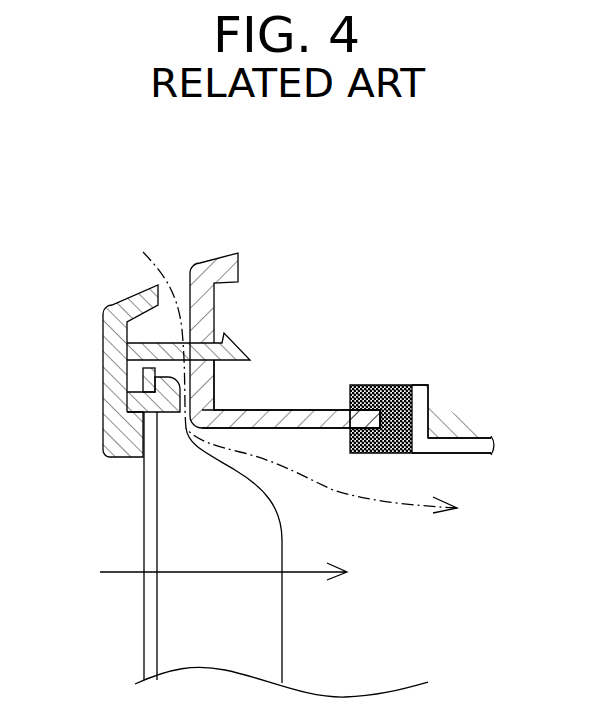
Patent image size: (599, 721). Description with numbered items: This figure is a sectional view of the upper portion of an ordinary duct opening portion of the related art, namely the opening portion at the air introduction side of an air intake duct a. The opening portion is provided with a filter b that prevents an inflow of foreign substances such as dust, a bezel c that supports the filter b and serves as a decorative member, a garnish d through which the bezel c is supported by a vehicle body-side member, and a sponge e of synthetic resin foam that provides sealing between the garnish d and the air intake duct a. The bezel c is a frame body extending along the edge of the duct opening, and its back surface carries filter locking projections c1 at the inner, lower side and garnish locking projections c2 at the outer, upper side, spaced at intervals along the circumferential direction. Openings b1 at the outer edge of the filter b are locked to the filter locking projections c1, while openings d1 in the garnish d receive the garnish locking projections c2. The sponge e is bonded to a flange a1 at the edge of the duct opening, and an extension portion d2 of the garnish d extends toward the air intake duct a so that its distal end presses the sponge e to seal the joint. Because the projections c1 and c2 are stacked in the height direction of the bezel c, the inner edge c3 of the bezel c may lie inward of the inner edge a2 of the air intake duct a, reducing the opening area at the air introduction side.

The air intake duct a is at (477, 434).
The flange a1 is at (428, 405).
The inner edge a2 is at (425, 455).
The filter b is at (296, 646).
The openings b1 is at (140, 401).
The bezel c is at (90, 345).
The filter locking projections c1 is at (172, 418).
The garnish locking projections c2 is at (240, 341).
The inner edge c3 is at (140, 457).
The garnish d is at (248, 250).
The openings d1 is at (213, 385).
The extension portion d2 is at (324, 409).
The sponge e is at (389, 378).